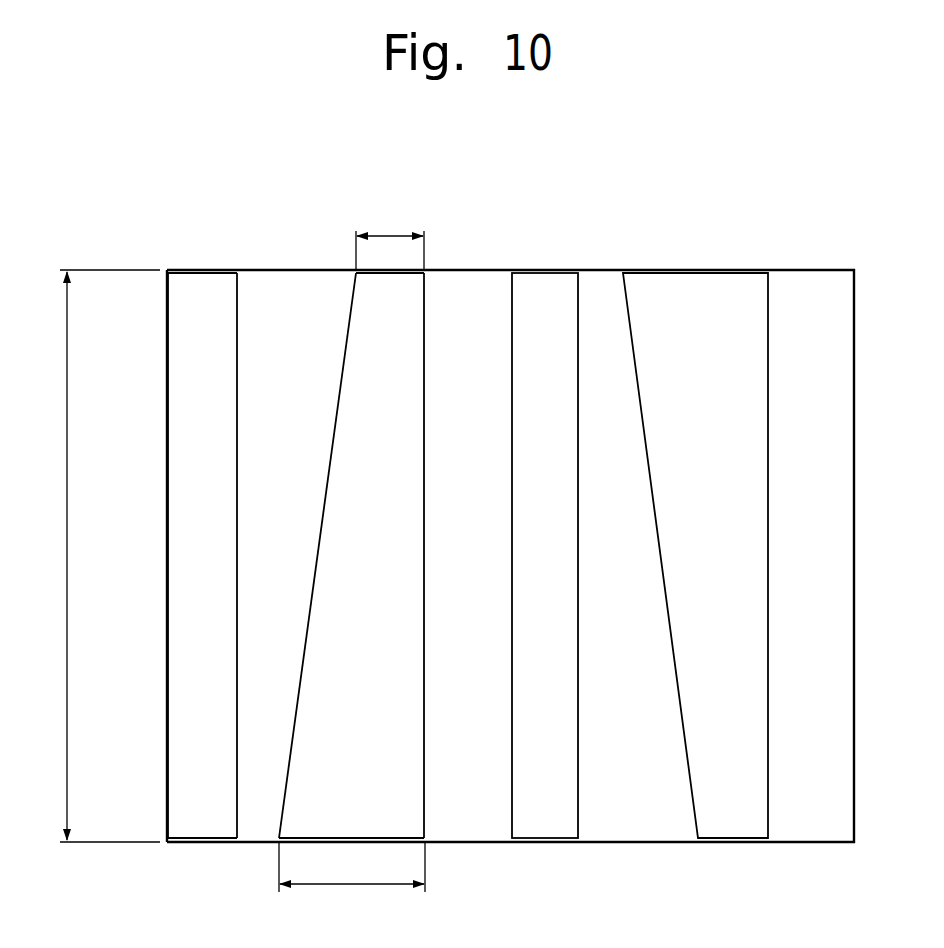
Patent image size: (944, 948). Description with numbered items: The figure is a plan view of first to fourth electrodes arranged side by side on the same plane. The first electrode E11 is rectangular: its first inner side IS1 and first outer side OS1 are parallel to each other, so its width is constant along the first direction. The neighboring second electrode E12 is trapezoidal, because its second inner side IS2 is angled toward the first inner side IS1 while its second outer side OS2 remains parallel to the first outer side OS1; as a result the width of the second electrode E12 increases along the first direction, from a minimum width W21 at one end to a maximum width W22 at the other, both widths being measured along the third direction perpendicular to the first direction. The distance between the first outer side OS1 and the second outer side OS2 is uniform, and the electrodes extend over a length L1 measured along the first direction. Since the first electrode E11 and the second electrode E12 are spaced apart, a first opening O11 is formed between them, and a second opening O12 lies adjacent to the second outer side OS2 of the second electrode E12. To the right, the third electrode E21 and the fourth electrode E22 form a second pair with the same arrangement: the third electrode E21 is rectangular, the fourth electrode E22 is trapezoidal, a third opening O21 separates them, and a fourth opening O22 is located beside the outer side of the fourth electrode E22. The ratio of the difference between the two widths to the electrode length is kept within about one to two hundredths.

The first electrode E11 is at (200, 287).
The second electrode E12 is at (400, 287).
The third electrode E21 is at (548, 287).
The fourth electrode E22 is at (708, 287).
The first opening O11 is at (293, 287).
The second opening O12 is at (469, 287).
The third opening O21 is at (600, 287).
The fourth opening O22 is at (816, 287).
The first outer side OS1 is at (167, 482).
The first inner side IS1 is at (236, 542).
The second inner side IS2 is at (310, 603).
The second outer side OS2 is at (423, 660).
The length L1 is at (98, 556).
The minimum width W21 is at (390, 238).
The maximum width W22 is at (352, 880).